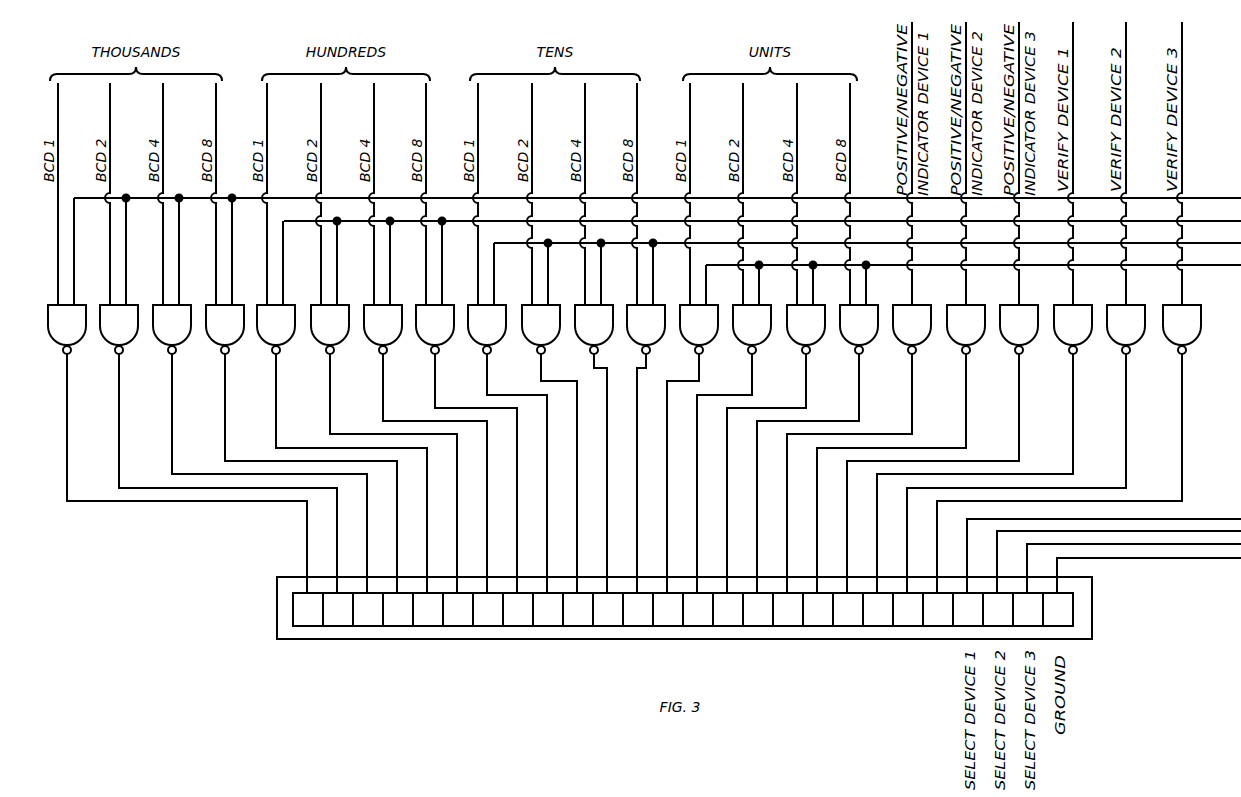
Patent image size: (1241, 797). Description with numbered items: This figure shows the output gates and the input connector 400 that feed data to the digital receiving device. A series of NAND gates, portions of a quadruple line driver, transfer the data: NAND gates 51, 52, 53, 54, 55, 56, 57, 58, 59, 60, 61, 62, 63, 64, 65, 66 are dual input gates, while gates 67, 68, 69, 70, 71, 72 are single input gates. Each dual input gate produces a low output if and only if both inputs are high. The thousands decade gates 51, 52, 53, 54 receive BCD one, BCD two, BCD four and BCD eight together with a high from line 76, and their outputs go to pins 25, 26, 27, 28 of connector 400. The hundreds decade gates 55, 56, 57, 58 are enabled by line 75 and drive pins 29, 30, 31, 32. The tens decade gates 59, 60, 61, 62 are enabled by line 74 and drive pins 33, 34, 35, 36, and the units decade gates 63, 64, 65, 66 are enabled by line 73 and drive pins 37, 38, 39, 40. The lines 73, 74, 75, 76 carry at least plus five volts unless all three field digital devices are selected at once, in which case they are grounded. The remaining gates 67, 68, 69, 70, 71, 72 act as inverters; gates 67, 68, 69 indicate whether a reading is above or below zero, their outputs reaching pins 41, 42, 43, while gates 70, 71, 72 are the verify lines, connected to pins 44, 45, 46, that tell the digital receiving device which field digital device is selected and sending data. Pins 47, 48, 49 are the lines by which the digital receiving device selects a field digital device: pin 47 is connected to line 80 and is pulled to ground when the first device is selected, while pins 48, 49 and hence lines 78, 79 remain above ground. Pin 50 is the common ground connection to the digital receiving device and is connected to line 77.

The pin 25 of connector 400 25 is at (308, 609).
The pin 26 of connector 400 26 is at (338, 609).
The pin 27 of connector 400 27 is at (368, 609).
The pin 28 of connector 400 28 is at (398, 609).
The pin 29 of connector 400 29 is at (428, 609).
The pin 30 of connector 400 30 is at (458, 609).
The pin 31 of connector 400 31 is at (488, 609).
The pin 32 of connector 400 32 is at (518, 609).
The pin 33 of connector 400 33 is at (548, 609).
The pin 34 of connector 400 34 is at (578, 609).
The pin 35 of connector 400 35 is at (608, 609).
The pin 36 of connector 400 36 is at (638, 609).
The pin 37 of connector 400 37 is at (668, 609).
The pin 38 of connector 400 38 is at (698, 609).
The pin 39 of connector 400 39 is at (728, 609).
The pin 40 of connector 400 40 is at (758, 609).
The pin 41 of connector 400 41 is at (788, 609).
The pin 42 of connector 400 42 is at (818, 609).
The pin 43 of connector 400 43 is at (848, 609).
The pin 44 of connector 400 44 is at (878, 609).
The pin 45 of connector 400 45 is at (908, 609).
The pin 46 of connector 400 46 is at (938, 609).
The pin 47 of connector 400 47 is at (968, 609).
The pin 48 of connector 400 48 is at (998, 609).
The pin 49 of connector 400 49 is at (1028, 609).
The pin 50 of connector 400 50 is at (1058, 609).
The NAND gate 51 is at (177, 338).
The NAND gate 52 is at (218, 338).
The NAND gate 53 is at (260, 338).
The NAND gate 54 is at (301, 338).
The NAND gate 55 is at (342, 338).
The NAND gate 56 is at (384, 338).
The NAND gate 57 is at (425, 338).
The NAND gate 58 is at (466, 338).
The NAND gate 59 is at (507, 338).
The NAND gate 60 is at (549, 338).
The NAND gate 61 is at (594, 338).
The NAND gate 62 is at (646, 338).
The NAND gate 63 is at (692, 338).
The NAND gate 64 is at (734, 338).
The NAND gate 65 is at (776, 338).
The NAND gate 66 is at (817, 338).
The NAND gate 67 is at (859, 307).
The NAND gate 68 is at (901, 307).
The NAND gate 69 is at (942, 307).
The NAND gate 70 is at (984, 307).
The NAND gate 71 is at (1026, 307).
The NAND gate 72 is at (1069, 307).
The line 73 is at (1222, 243).
The line 74 is at (1236, 265).
The line 75 is at (1204, 221).
The line 76 is at (1230, 198).
The line 77 is at (1168, 559).
The line 78 is at (1196, 544).
The line 79 is at (1206, 531).
The line 80 is at (1226, 519).
The connector 400 is at (650, 593).